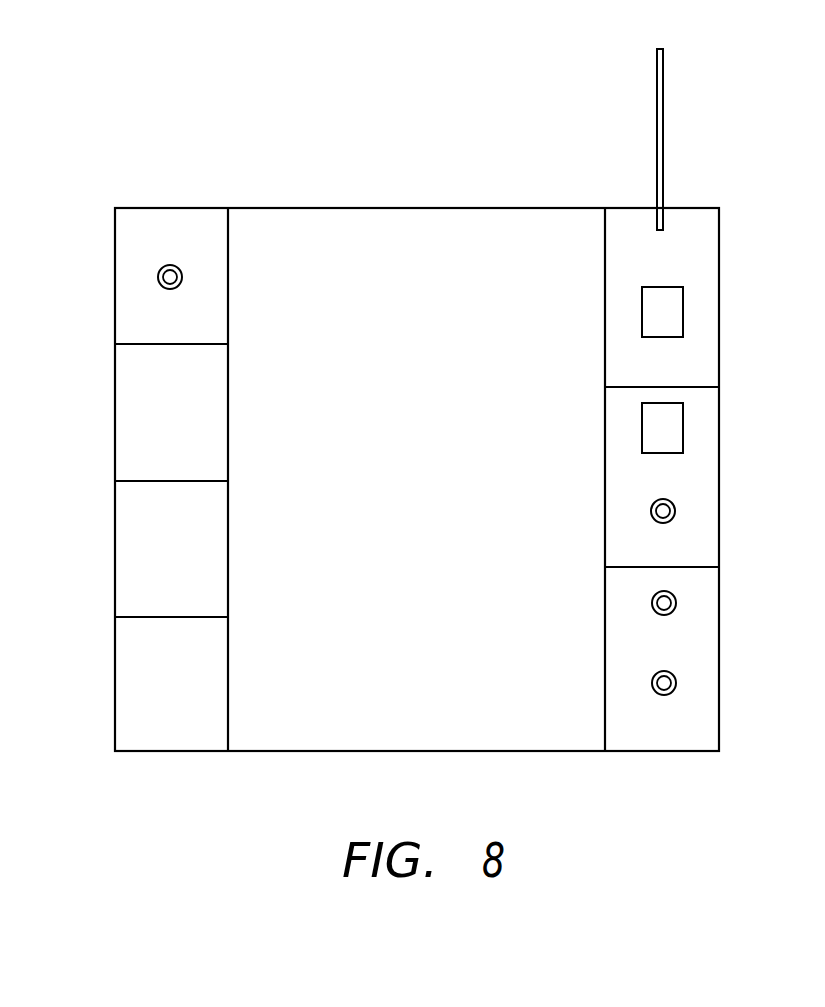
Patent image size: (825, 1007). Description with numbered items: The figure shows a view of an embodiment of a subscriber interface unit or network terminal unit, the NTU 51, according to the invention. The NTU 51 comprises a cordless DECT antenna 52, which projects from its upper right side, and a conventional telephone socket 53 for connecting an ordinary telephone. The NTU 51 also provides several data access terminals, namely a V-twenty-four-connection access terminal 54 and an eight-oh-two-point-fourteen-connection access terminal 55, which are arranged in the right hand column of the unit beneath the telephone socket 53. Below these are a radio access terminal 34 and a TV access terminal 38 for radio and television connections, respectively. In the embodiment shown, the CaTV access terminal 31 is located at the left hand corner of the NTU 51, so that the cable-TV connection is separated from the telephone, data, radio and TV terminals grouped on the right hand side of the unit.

The CaTV access terminal 31 is at (157, 275).
The radio access terminal 34 is at (678, 603).
The TV access terminal 38 is at (678, 683).
The NTU 51 is at (297, 207).
The cordless DECT antenna 52 is at (664, 137).
The conventional telephone socket 53 is at (685, 312).
The V.24-connection access terminal 54 is at (685, 428).
The 802.14-connection access terminal 55 is at (676, 511).